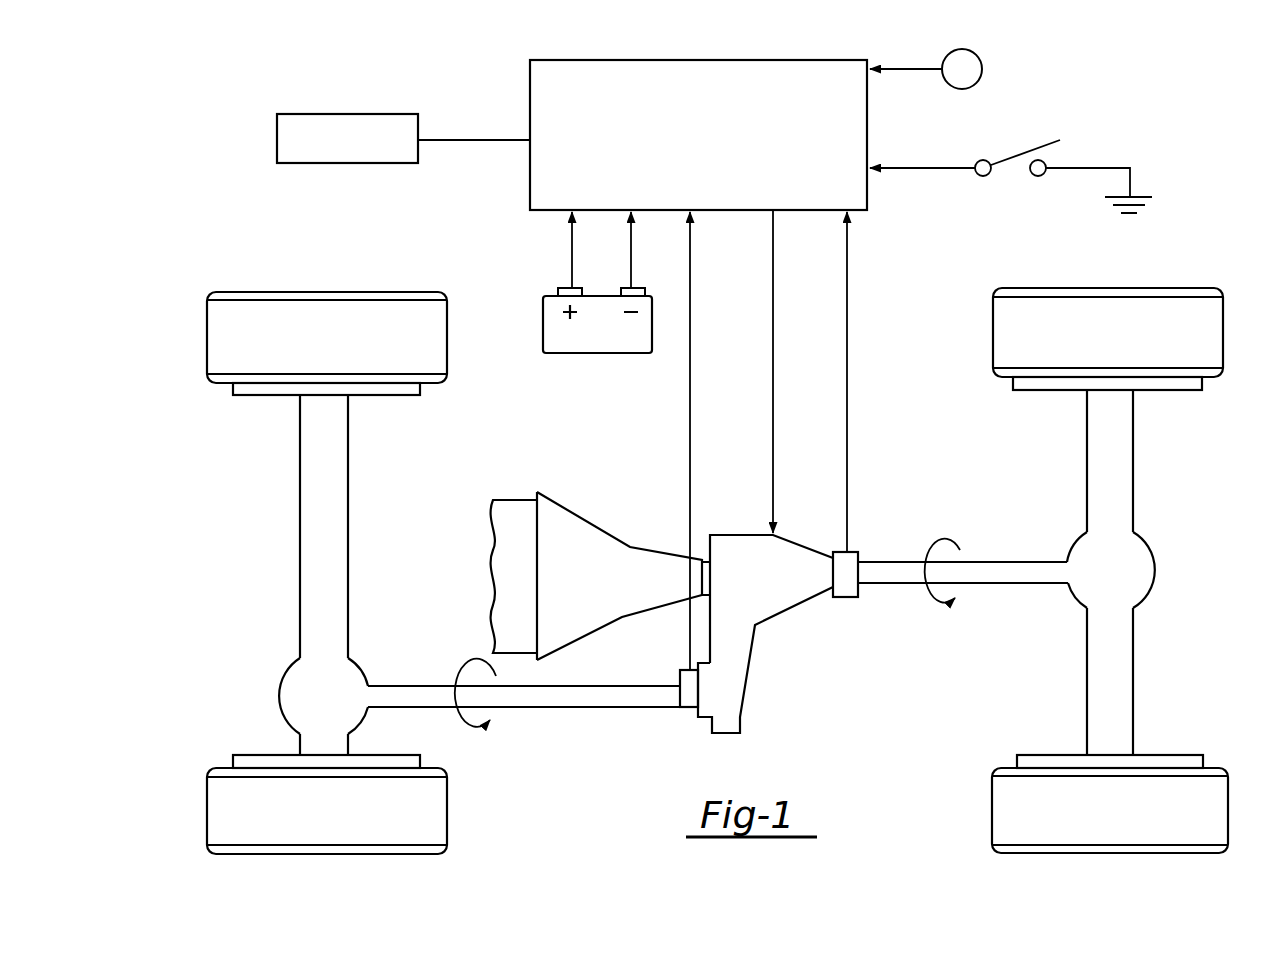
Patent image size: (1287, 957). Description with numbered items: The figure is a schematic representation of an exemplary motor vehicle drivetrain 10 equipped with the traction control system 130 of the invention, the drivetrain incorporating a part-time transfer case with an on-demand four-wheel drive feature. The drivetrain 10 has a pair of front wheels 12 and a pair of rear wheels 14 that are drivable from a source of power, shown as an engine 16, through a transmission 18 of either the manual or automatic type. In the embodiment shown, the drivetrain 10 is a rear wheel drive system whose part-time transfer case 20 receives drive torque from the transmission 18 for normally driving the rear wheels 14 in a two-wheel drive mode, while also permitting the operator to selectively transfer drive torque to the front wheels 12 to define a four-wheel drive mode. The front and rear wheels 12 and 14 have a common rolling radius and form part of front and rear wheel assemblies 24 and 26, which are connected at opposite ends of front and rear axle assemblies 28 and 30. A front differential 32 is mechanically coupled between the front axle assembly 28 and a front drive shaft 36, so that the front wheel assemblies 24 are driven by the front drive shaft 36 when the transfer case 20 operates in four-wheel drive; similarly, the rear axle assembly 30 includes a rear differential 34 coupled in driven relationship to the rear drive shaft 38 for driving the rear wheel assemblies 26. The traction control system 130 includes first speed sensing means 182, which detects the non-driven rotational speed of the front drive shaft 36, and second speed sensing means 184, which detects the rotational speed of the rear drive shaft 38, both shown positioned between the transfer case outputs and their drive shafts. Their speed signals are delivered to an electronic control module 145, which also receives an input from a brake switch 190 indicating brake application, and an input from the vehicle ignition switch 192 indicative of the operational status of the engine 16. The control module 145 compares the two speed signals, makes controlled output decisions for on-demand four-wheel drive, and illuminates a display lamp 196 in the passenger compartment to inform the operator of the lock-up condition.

The motor vehicle drivetrain 10 is at (892, 657).
The front wheels 12 is at (325, 292).
The rear wheels 14 is at (1145, 300).
The engine 16 is at (510, 507).
The transmission 18 is at (575, 522).
The part-time transfer case 20 is at (793, 597).
The front wheel assemblies 24 is at (376, 399).
The rear wheel assemblies 26 is at (1139, 394).
The front axle assembly 28 is at (294, 501).
The rear axle assembly 30 is at (1138, 483).
The front differential 32 is at (312, 668).
The rear differential 34 is at (1145, 553).
The front drive shaft 36 is at (592, 697).
The rear drive shaft 38 is at (1035, 570).
The traction control system 130 is at (880, 287).
The control module 145 is at (748, 57).
The first speed sensing means 182 is at (690, 711).
The second speed sensing means 184 is at (859, 549).
The brake switch 190 is at (1082, 105).
The ignition switch 192 is at (966, 50).
The display lamp 196 is at (340, 165).